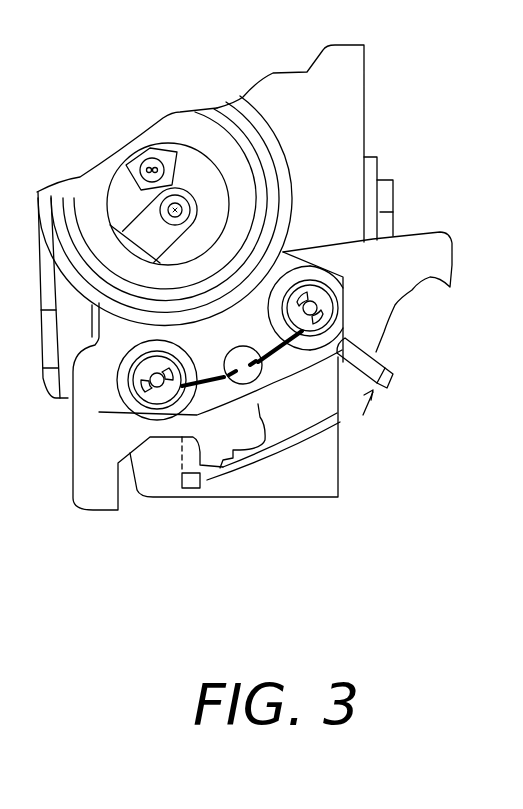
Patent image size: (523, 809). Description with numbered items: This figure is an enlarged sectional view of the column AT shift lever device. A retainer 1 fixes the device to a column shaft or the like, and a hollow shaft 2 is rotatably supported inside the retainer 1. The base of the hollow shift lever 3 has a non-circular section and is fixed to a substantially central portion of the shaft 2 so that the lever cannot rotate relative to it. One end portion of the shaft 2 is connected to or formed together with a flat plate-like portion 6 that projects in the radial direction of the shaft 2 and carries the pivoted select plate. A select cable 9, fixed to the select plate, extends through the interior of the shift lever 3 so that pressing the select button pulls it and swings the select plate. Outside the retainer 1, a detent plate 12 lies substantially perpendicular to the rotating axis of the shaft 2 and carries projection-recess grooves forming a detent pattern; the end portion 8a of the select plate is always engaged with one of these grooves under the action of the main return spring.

The retainer 1 is at (347, 73).
The shaft 2 is at (218, 108).
The shift lever 3 is at (173, 133).
The flat plate-like portion 6 is at (303, 470).
The end portion of the select plate 8a is at (390, 374).
The select cable 9 is at (182, 205).
The detent plate 12 is at (390, 280).